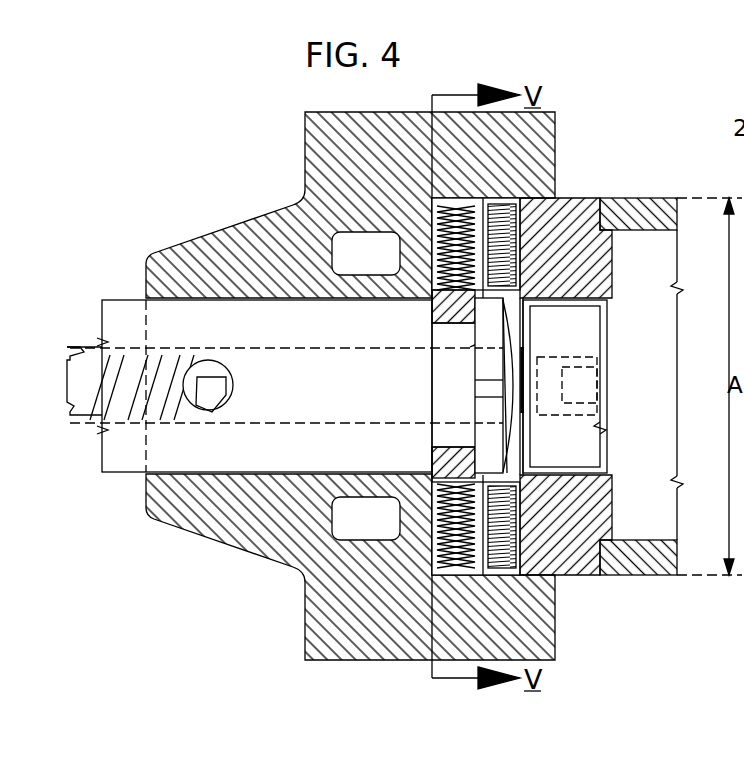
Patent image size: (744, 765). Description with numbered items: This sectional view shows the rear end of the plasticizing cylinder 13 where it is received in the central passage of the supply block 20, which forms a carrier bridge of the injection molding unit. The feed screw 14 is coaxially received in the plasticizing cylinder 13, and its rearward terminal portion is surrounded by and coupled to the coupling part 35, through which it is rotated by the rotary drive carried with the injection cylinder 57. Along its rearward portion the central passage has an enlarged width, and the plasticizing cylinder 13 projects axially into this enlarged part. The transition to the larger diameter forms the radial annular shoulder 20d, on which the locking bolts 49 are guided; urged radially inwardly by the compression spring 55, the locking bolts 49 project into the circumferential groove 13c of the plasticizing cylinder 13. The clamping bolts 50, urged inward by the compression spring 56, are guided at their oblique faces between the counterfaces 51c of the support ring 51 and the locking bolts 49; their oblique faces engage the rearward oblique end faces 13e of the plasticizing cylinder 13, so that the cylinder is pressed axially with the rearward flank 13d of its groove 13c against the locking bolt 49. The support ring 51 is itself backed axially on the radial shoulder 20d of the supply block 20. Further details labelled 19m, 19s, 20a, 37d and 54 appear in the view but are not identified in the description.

The plasticizing cylinder 13 is at (327, 397).
The circumferential groove 13c is at (425, 465).
The rearward flank 13d is at (428, 447).
The rearward oblique end faces 13e is at (531, 346).
The feed screw 14 is at (86, 355).
The intermediate member 19m is at (489, 390).
The spring member 19s is at (570, 458).
The supply block 20 is at (296, 149).
The housing opening 20a is at (206, 250).
The radial annular shoulder 20d is at (430, 218).
The coupling part 35 is at (613, 413).
The cam 37d is at (468, 347).
The locking bolts 49 is at (432, 322).
The clamping bolts 50 is at (531, 306).
The support ring 51 is at (622, 265).
The counterfaces 51c is at (531, 386).
The pin 54 is at (196, 372).
The compression spring 55 is at (442, 205).
The compression spring 56 is at (502, 205).
The injection cylinder 57 is at (620, 213).